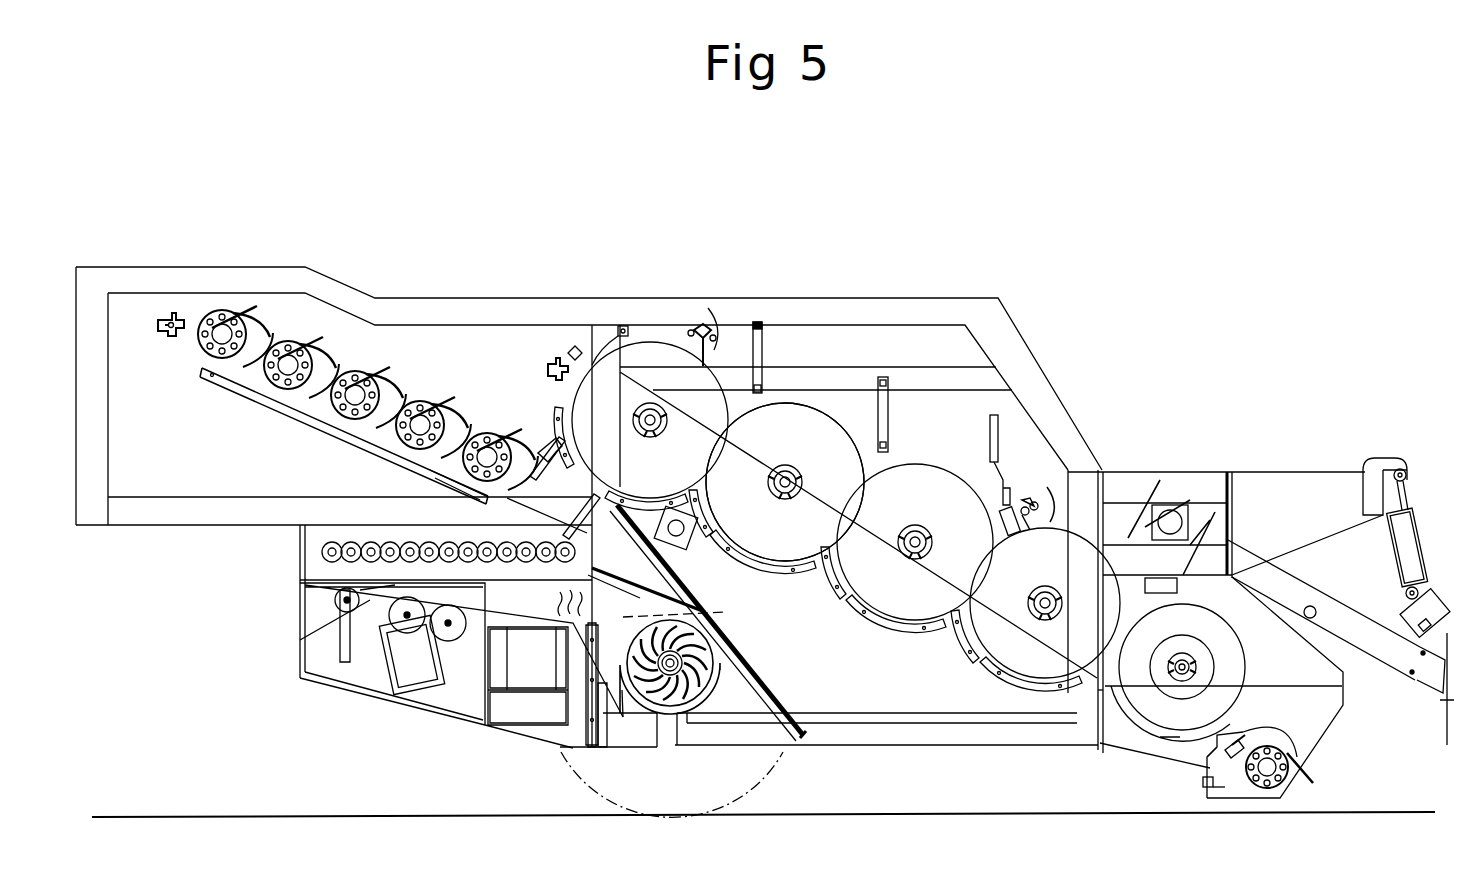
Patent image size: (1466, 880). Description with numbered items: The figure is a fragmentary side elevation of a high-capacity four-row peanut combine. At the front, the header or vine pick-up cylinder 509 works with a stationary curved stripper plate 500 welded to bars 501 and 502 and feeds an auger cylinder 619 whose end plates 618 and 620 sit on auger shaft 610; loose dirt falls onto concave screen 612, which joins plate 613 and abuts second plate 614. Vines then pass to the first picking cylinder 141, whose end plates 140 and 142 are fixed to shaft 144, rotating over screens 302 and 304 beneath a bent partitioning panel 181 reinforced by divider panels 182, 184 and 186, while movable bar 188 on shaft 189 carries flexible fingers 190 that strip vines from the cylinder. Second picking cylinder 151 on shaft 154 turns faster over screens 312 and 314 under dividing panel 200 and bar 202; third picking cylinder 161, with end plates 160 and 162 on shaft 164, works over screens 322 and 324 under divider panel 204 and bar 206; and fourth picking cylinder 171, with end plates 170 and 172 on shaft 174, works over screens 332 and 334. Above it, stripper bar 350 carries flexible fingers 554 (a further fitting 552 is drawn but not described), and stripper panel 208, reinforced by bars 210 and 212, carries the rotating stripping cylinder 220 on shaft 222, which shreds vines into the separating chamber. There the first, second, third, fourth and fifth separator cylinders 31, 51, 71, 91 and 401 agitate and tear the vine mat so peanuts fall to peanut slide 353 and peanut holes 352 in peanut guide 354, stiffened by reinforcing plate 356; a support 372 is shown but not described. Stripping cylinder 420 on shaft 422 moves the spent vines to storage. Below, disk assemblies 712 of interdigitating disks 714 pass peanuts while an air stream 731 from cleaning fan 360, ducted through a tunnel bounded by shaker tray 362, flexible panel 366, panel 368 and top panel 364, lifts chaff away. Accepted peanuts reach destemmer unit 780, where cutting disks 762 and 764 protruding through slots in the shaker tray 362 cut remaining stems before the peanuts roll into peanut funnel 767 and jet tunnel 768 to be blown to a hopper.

The first separator cylinder 31 is at (487, 435).
The second separator cylinder 51 is at (420, 402).
The third separator cylinder 71 is at (355, 372).
The fourth separator cylinder 91 is at (288, 342).
The fifth separating cylinder 401 is at (222, 310).
The stripping cylinder 420 is at (136, 284).
The shaft 422 is at (168, 324).
The peanut slide 353 is at (342, 433).
The peanut guide 354 is at (549, 452).
The reinforcing plate 356 is at (528, 484).
The peanut holes 352 is at (507, 499).
The conveyor end support 372 is at (483, 498).
The screen 334 is at (587, 450).
The disks 714 is at (382, 544).
The disk assembly 712 is at (420, 588).
The peanut funnel 767 is at (528, 658).
The jet tunnel 768 is at (490, 722).
The cutting disk 762 is at (380, 686).
The cutting disk 764 is at (407, 688).
The destemmer unit 780 is at (388, 697).
The shaker tray 362 is at (372, 602).
The air stream 731 is at (553, 600).
The flexible panel 366 is at (590, 747).
The panel 368 is at (622, 690).
The cleaning fan 360 is at (718, 683).
The panel 364 is at (656, 598).
The screen 332 is at (619, 512).
The shaft 174 is at (662, 428).
The shaft 164 is at (785, 509).
The third picking cylinder 161 is at (748, 542).
The shaft 154 is at (915, 570).
The second picking cylinder 151 is at (881, 602).
The shaft 144 is at (1008, 615).
The first picking cylinder 141 is at (1003, 641).
The screen 322 is at (748, 568).
The screen 314 is at (826, 584).
The screen 312 is at (846, 602).
The concave screen 304 is at (958, 636).
The screen 302 is at (1006, 682).
The screen 324 is at (703, 524).
The rotating stripping cylinder 220 is at (530, 325).
The shaft 222 is at (548, 372).
The reinforcing bar 212 is at (575, 346).
The stripper panel 208 is at (624, 305).
The reinforcing bar 210 is at (626, 328).
The fourth picking cylinder 171 is at (660, 352).
The nozzle 552 is at (1071, 530).
The flexible fingers 554 is at (788, 307).
The stripper bar 350 is at (788, 307).
The end plate 170 is at (788, 307).
The end plate 172 is at (706, 368).
The divider panel 204 is at (793, 330).
The bar 206 is at (763, 384).
The dividing panel 200 is at (923, 357).
The bar 202 is at (890, 440).
The end plate 160 is at (789, 477).
The end plate 162 is at (805, 408).
The divider panel 182 is at (1085, 468).
The bent partitioning panel 181 is at (1085, 480).
The divider panel 184 is at (1085, 492).
The divider panel 186 is at (1085, 501).
The movable bar 188 is at (1085, 501).
The shaft 189 is at (1036, 501).
The flexible fingers 190 is at (1032, 518).
The cylinder end plate 140 is at (1216, 514).
The cylinder end plate 142 is at (1105, 483).
The auger cylinder end plate 618 is at (1204, 601).
The auger cylinder end plate 620 is at (1180, 607).
The auger cylinder 619 is at (1221, 686).
The auger shaft 610 is at (1190, 674).
The concave screen 612 is at (1138, 740).
The second plate 614 is at (1098, 737).
The plate 613 is at (1205, 776).
The bar 502 is at (1203, 784).
The stripper plate 500 is at (1295, 687).
The bar 501 is at (1285, 687).
The header cylinder 509 is at (1310, 753).